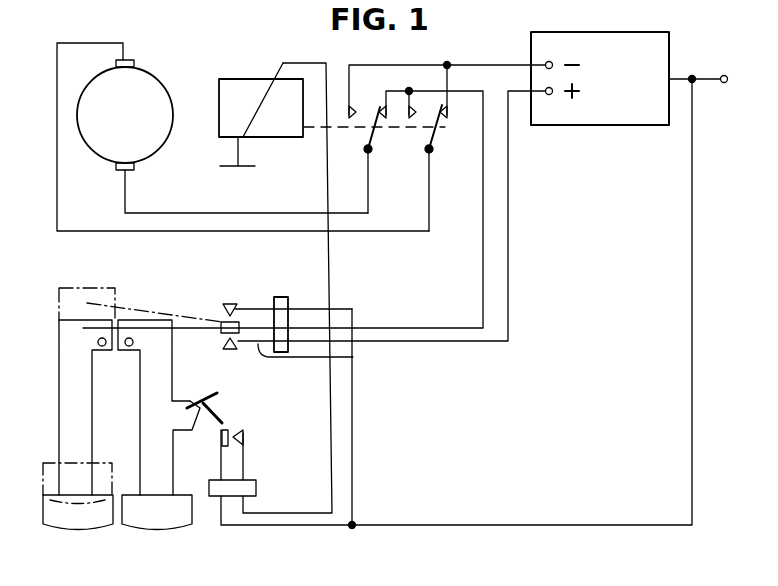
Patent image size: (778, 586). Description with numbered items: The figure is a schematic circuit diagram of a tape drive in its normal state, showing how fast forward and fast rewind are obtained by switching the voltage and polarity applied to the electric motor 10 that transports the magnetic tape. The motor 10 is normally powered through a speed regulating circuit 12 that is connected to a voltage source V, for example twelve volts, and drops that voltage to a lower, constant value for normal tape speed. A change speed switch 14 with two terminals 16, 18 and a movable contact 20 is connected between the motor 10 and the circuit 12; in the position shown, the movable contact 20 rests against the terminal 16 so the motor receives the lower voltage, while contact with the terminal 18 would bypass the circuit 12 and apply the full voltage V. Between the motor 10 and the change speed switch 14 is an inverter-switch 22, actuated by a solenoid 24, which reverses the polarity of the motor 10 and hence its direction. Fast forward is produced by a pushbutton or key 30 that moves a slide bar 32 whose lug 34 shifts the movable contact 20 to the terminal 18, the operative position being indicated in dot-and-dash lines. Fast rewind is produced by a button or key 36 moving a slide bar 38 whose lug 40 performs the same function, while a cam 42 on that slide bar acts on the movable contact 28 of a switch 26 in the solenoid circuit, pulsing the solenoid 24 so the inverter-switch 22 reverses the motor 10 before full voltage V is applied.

The electric motor 10 is at (147, 90).
The speed regulating circuit 12 is at (613, 110).
The change speed switch 14 is at (285, 299).
The terminal 16 is at (324, 363).
The terminal 18 is at (229, 302).
The movable contact 20 is at (188, 323).
The inverter-switch 22 is at (410, 172).
The solenoid 24 is at (247, 92).
The switch 26 is at (238, 487).
The movable contact 28 is at (223, 415).
The pushbutton or key 30 is at (73, 518).
The slide bar 32 is at (68, 415).
The lug 34 is at (97, 342).
The button or key 36 is at (143, 520).
The slide bar 38 is at (162, 481).
The lug 40 is at (134, 342).
The cam 42 is at (192, 398).
The voltage source V is at (728, 60).